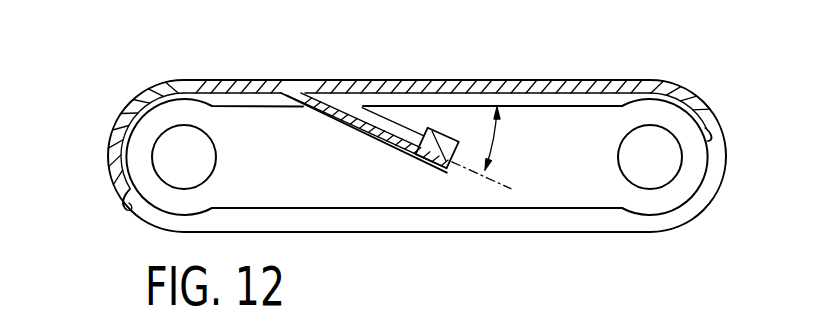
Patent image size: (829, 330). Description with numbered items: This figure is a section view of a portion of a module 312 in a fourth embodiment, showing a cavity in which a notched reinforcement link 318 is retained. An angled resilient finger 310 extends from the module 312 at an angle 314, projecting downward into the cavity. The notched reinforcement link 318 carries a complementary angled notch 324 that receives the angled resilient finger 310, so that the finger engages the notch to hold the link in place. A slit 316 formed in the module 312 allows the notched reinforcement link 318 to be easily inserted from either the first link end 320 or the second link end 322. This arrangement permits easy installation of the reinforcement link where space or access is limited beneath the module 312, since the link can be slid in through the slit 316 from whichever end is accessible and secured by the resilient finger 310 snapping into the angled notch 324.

The angled resilient finger 310 is at (357, 104).
The module 312 is at (229, 90).
The angle 314 is at (498, 137).
The slit 316 is at (714, 134).
The notched reinforcement link 318 is at (336, 184).
The first link end 320 is at (705, 210).
The second link end 322 is at (128, 207).
The complementary angled notch 324 is at (410, 157).